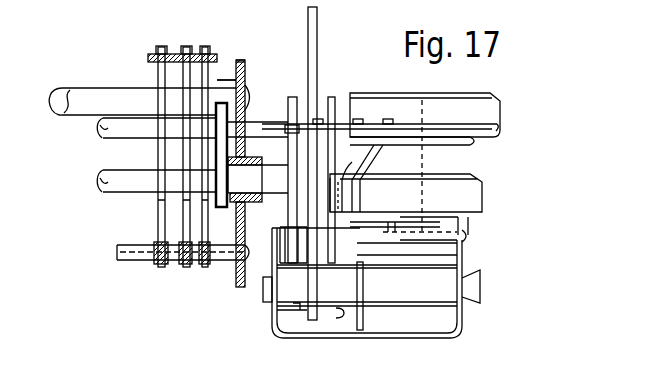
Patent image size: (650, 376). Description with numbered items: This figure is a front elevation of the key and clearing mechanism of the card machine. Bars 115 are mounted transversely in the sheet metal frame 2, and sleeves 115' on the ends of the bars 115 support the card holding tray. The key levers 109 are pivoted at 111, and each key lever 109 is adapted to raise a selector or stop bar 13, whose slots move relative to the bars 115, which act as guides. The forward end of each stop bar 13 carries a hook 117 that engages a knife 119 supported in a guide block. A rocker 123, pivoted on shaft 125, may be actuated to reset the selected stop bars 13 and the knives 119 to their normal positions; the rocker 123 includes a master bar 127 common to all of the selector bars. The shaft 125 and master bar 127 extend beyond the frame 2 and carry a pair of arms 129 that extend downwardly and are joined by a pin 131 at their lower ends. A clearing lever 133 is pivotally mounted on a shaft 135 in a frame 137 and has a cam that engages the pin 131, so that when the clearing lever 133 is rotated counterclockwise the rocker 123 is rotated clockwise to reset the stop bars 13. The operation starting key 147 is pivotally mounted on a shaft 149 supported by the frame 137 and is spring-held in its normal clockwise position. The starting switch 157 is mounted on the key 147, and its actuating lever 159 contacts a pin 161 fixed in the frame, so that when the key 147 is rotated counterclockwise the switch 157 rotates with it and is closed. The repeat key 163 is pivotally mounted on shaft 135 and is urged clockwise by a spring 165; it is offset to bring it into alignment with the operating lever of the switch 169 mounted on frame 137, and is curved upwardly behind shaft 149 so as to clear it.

The sheet metal frame 2 is at (245, 66).
The stop bar 13 is at (206, 76).
The key lever 109 is at (207, 219).
The pivot 111 is at (132, 253).
The bar 115 is at (149, 89).
The sleeve 115' is at (255, 52).
The hook 117 is at (204, 48).
The knife 119 is at (212, 82).
The rocker 123 is at (228, 128).
The shaft 125 is at (118, 190).
The master bar 127 is at (118, 134).
The arm 129 is at (333, 97).
The pin 131 is at (298, 222).
The clearing lever 133 is at (318, 30).
The shaft 135 is at (265, 280).
The frame 137 is at (462, 322).
The operation starting key 147 is at (467, 191).
The shaft 149 is at (455, 255).
The starting switch 157 is at (408, 161).
The actuating lever 159 is at (393, 220).
The pin 161 is at (412, 243).
The repeat key 163 is at (479, 108).
The spring 165 is at (364, 323).
The switch 169 is at (340, 138).